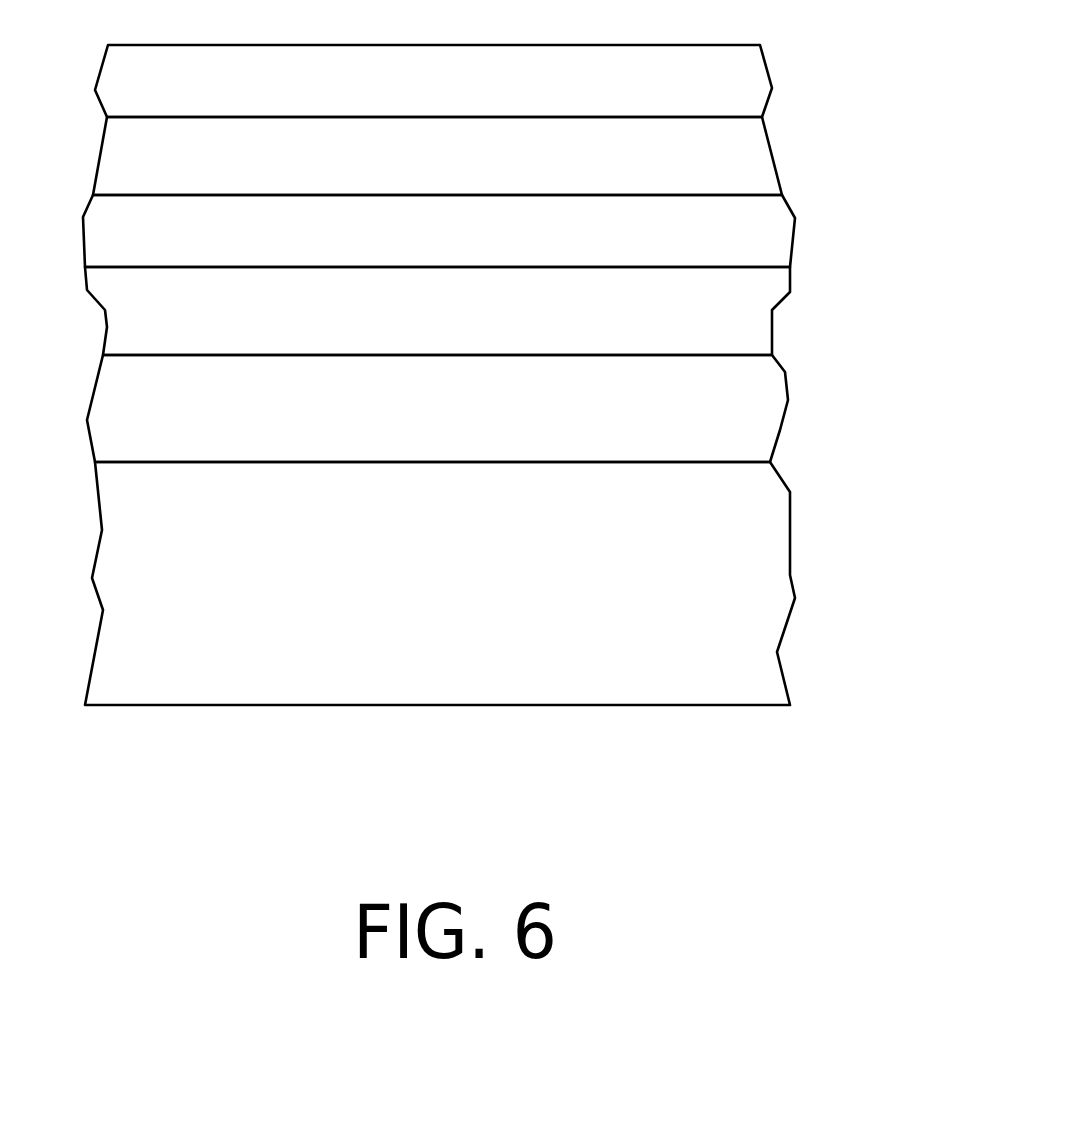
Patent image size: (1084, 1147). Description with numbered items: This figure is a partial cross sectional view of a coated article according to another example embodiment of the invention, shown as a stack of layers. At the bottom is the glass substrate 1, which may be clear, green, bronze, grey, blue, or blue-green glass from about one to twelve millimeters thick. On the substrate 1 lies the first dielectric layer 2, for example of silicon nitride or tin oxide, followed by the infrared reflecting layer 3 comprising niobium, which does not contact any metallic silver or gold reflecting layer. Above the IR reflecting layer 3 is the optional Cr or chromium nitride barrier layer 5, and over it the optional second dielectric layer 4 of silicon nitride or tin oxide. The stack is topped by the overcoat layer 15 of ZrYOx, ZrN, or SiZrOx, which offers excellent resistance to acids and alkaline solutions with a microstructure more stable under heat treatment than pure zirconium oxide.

The overcoat layer 15 is at (752, 73).
The second dielectric layer 4 is at (746, 152).
The barrier layer 5 is at (728, 244).
The infrared (IR) reflecting layer 3 is at (752, 325).
The first dielectric layer 2 is at (753, 425).
The substrate 1 is at (753, 571).